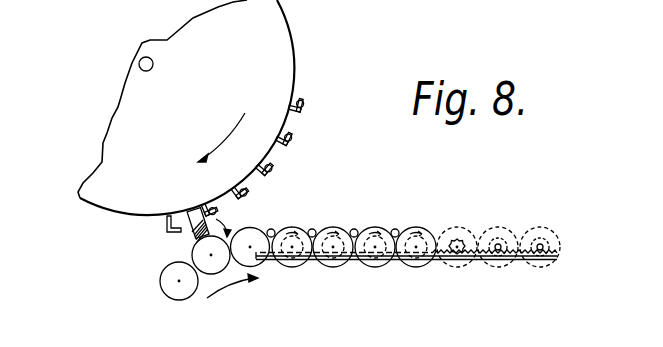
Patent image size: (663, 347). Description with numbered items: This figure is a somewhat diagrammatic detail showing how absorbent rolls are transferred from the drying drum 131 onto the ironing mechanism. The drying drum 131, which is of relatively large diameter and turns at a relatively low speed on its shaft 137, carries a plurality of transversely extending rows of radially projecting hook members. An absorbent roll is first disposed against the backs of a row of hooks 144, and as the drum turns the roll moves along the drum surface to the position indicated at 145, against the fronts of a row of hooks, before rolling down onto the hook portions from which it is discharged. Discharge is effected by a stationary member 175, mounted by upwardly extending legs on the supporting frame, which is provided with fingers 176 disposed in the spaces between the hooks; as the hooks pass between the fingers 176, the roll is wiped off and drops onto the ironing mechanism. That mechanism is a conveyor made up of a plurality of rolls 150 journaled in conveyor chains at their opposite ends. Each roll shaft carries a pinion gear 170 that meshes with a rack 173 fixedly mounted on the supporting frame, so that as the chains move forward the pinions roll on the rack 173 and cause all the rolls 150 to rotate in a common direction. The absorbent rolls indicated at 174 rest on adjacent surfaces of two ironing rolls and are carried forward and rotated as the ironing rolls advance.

The drying drum 131 is at (285, 72).
The shaft 137 is at (153, 65).
The row of hooks 144 is at (293, 141).
The position of roll against fronts of hooks 145 is at (305, 105).
The rolls 150 is at (379, 231).
The pinion gear 170 is at (459, 238).
The rack 173 is at (476, 259).
The absorbent rolls 174 is at (313, 230).
The member 175 is at (193, 233).
The fingers 176 is at (196, 215).